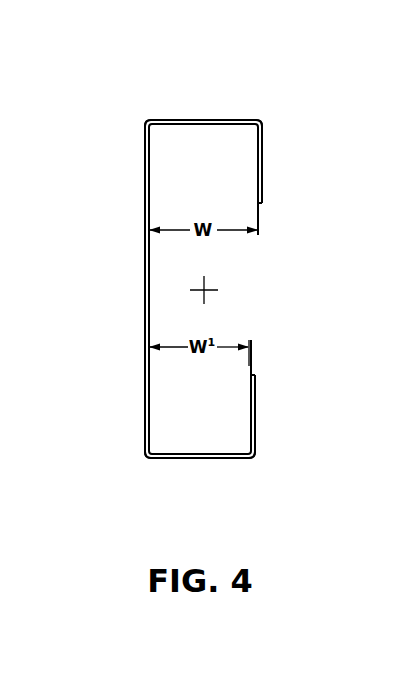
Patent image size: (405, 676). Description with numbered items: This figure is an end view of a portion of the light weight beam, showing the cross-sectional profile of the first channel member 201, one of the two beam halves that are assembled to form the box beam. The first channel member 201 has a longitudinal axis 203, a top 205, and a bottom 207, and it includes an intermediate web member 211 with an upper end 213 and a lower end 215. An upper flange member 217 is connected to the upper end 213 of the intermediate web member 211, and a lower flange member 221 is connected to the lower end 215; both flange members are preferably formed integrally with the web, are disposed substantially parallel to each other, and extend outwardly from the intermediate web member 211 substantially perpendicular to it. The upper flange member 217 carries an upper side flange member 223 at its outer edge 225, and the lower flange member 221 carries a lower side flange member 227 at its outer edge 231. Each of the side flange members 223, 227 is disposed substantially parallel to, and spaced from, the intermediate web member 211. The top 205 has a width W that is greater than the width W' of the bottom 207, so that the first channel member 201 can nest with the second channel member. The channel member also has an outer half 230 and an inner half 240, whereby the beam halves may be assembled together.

The first channel member 201 is at (239, 119).
The longitudinal axis 203 is at (208, 284).
The top 205 is at (206, 102).
The bottom 207 is at (185, 468).
The intermediate web member 211 is at (145, 272).
The upper end 213 is at (142, 119).
The lower end 215 is at (143, 461).
The upper flange member 217 is at (195, 120).
The lower flange member 221 is at (212, 459).
The upper side flange member 223 is at (265, 181).
The outer edge 225 is at (268, 122).
The lower side flange member 227 is at (257, 428).
The outer half 230 is at (265, 159).
The outer edge 231 is at (257, 461).
The inner half 240 is at (257, 405).